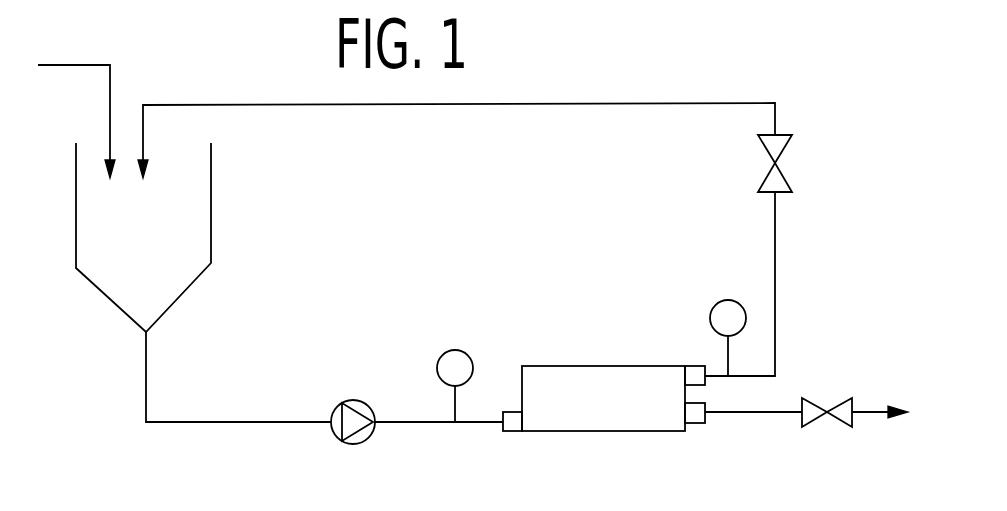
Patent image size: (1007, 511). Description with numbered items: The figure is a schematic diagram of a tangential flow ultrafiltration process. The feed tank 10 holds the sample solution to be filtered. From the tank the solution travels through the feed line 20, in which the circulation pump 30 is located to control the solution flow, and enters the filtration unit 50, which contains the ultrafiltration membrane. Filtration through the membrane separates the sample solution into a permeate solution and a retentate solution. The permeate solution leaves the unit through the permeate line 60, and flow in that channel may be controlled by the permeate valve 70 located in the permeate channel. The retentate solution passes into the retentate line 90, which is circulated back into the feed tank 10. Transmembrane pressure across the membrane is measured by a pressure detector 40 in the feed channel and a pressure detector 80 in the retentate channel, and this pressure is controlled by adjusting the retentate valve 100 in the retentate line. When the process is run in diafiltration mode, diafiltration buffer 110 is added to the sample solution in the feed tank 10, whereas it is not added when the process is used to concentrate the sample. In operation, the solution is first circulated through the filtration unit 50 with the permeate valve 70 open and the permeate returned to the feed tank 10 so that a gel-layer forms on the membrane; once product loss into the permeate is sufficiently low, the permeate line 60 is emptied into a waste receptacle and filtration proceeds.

The feed tank 10 is at (211, 208).
The feed line 20 is at (146, 388).
The circulation pump 30 is at (353, 400).
The pressure detector in the feed channel 40 is at (473, 367).
The filtration unit 50 is at (668, 431).
The permeate line 60 is at (767, 412).
The permeate valve 70 is at (832, 400).
The pressure detector in the retentate channel 80 is at (711, 322).
The retentate line 90 is at (776, 250).
The retentate valve 100 is at (790, 135).
The diafiltration buffer 110 is at (88, 65).